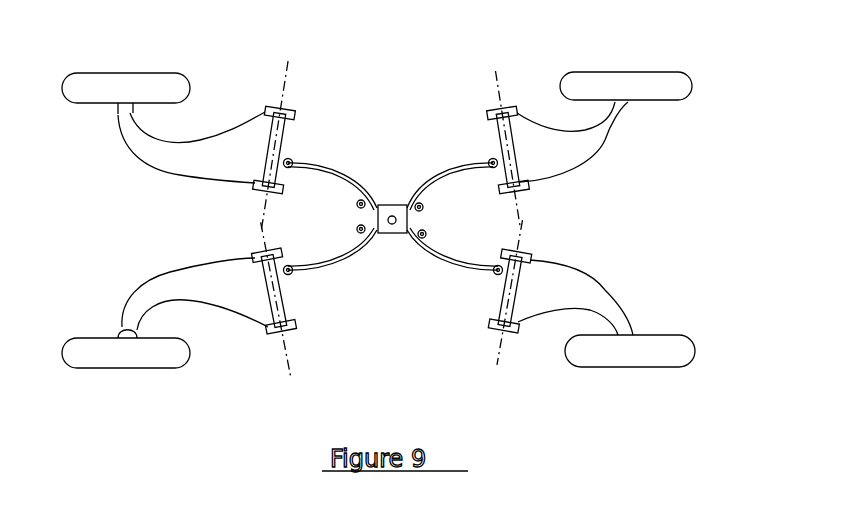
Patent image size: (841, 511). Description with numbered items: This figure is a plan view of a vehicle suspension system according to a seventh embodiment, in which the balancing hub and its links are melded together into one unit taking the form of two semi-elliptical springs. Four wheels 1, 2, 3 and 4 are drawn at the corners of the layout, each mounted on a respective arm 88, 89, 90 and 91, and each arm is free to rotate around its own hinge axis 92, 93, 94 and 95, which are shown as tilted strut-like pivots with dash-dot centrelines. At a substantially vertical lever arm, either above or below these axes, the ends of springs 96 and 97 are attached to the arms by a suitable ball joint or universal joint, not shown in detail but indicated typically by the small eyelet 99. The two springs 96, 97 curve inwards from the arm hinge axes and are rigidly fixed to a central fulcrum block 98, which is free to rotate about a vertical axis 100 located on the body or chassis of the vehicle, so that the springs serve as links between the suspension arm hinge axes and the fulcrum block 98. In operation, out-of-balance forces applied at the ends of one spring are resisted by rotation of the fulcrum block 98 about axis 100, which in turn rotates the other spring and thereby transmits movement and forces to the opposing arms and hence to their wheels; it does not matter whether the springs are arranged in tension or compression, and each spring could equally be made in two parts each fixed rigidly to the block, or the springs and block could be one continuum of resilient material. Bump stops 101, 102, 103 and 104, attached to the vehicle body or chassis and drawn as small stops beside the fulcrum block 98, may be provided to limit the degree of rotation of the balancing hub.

The wheel 1 is at (77, 347).
The wheel 2 is at (80, 80).
The wheel 3 is at (633, 75).
The wheel 4 is at (675, 338).
The arm 88 is at (177, 278).
The arm 89 is at (218, 143).
The arm 90 is at (537, 132).
The arm 91 is at (568, 283).
The axis 92 is at (282, 337).
The axis 93 is at (287, 82).
The axis 94 is at (493, 83).
The axis 95 is at (495, 342).
The spring 96 is at (330, 173).
The spring 97 is at (435, 170).
The fulcrum block 98 is at (378, 235).
The ball joint or universal joint 99 is at (290, 162).
The vertical axis 100 is at (392, 215).
The bump stop 101 is at (357, 203).
The bump stop 102 is at (432, 203).
The bump stop 103 is at (425, 228).
The bump stop 104 is at (357, 228).